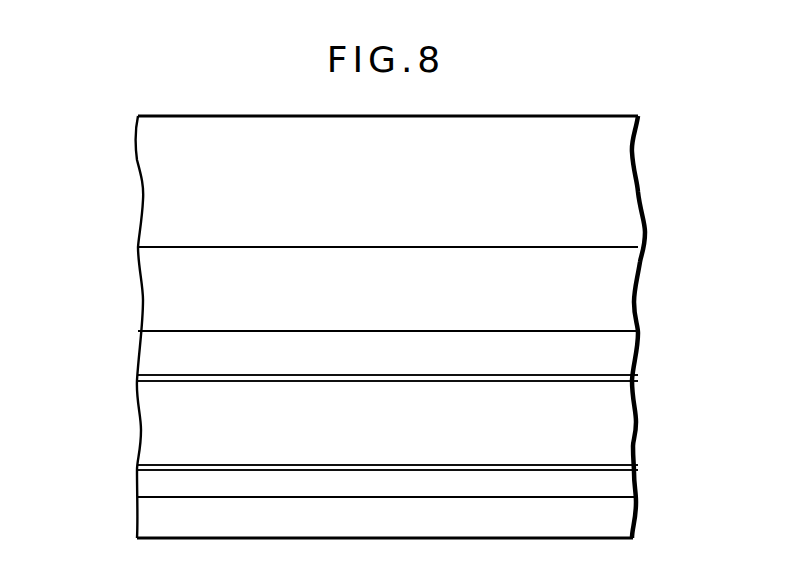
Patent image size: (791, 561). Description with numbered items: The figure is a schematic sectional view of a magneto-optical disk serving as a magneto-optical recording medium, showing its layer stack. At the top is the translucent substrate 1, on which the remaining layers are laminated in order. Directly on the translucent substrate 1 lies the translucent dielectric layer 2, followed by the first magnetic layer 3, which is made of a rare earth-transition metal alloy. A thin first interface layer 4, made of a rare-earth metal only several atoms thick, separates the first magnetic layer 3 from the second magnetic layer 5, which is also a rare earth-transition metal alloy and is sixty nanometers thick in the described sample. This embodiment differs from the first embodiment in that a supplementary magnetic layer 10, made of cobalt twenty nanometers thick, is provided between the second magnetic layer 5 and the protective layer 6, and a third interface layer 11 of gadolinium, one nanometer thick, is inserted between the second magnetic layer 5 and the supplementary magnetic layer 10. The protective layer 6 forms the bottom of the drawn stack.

The translucent substrate 1 is at (620, 190).
The translucent dielectric layer 2 is at (620, 290).
The first magnetic layer 3 is at (620, 355).
The first interface layer 4 is at (632, 378).
The second magnetic layer 5 is at (620, 444).
The third interface layer 11 is at (137, 468).
The supplementary magnetic layer 10 is at (622, 487).
The protective layer 6 is at (620, 524).